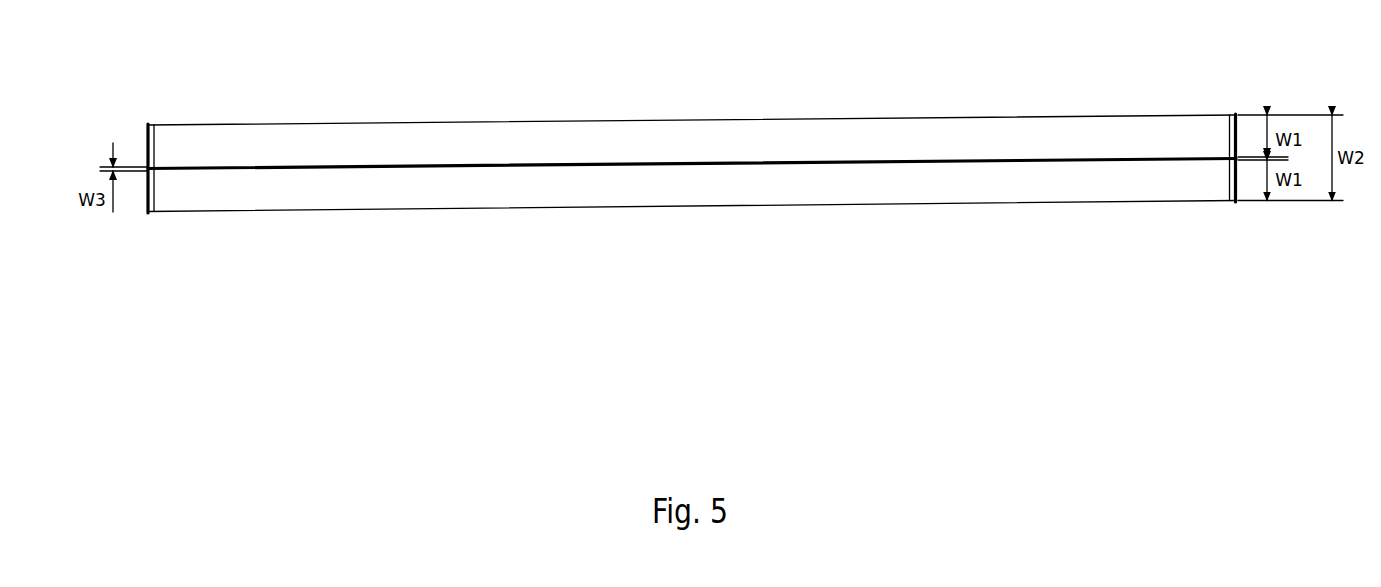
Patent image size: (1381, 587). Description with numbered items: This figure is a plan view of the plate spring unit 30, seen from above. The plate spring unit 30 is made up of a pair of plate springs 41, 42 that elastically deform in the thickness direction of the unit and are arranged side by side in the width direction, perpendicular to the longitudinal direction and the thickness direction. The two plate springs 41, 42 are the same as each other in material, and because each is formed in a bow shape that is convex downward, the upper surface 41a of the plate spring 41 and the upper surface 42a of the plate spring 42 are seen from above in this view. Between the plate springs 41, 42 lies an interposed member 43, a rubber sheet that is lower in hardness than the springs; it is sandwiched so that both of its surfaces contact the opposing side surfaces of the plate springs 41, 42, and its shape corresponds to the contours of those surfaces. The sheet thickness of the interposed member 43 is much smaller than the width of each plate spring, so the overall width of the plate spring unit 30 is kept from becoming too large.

The plate spring unit 30 is at (692, 155).
The plate spring 41 is at (692, 250).
The upper surface of plate spring 41a is at (972, 197).
The plate spring 42 is at (692, 94).
The upper surface of plate spring 42a is at (970, 135).
The interposed member 43 is at (785, 160).